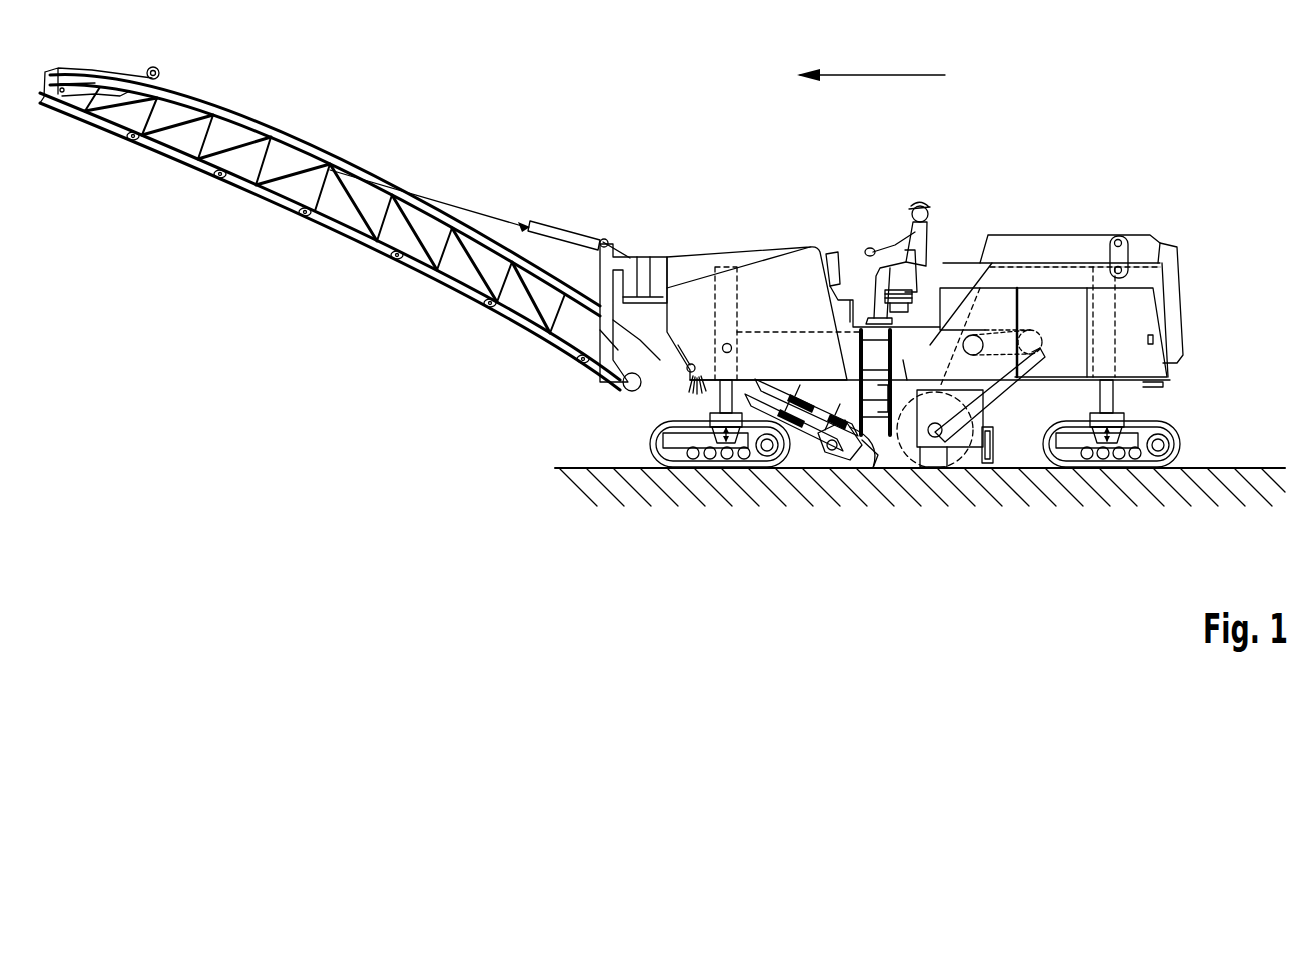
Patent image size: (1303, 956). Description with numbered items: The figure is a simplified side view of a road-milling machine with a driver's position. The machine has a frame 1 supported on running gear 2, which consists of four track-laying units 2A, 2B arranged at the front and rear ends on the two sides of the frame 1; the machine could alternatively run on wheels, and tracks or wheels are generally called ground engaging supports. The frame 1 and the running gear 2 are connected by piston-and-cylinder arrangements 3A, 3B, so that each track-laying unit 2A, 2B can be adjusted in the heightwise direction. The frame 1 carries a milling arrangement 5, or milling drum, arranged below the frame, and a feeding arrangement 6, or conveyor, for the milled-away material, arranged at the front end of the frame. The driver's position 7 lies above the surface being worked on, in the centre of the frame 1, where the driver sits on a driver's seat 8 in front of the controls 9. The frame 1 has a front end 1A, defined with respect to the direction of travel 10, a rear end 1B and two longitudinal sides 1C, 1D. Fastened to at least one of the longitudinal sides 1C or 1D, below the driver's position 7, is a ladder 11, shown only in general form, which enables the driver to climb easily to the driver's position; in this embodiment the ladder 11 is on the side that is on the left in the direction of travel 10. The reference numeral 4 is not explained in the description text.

The frame 1 is at (878, 344).
The front end 1A is at (545, 375).
The rear end 1B is at (1213, 357).
The longitudinal side 1C is at (907, 362).
The longitudinal side 1D is at (1070, 236).
The running gear 2 is at (915, 490).
The track-laying unit 2A is at (733, 470).
The track-laying unit 2B is at (1136, 470).
The piston-and-cylinder arrangement 3A is at (719, 402).
The piston-and-cylinder arrangement 3B is at (1114, 402).
The ground surface 4 is at (630, 456).
The milling arrangement 5 is at (977, 452).
The feeding arrangement 6 is at (489, 190).
The driver's position 7 is at (887, 212).
The driver's seat 8 is at (938, 258).
The controls 9 is at (831, 253).
The direction of travel 10 is at (882, 74).
The ladder 11 is at (872, 467).